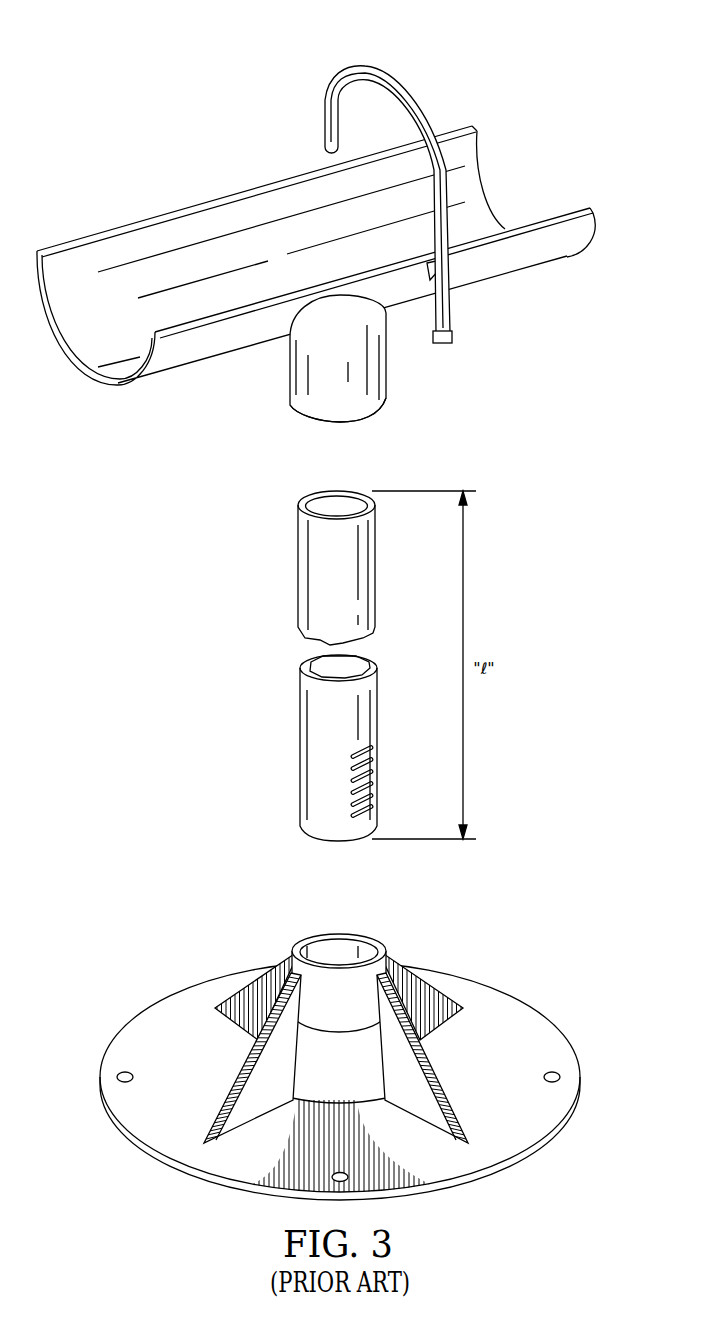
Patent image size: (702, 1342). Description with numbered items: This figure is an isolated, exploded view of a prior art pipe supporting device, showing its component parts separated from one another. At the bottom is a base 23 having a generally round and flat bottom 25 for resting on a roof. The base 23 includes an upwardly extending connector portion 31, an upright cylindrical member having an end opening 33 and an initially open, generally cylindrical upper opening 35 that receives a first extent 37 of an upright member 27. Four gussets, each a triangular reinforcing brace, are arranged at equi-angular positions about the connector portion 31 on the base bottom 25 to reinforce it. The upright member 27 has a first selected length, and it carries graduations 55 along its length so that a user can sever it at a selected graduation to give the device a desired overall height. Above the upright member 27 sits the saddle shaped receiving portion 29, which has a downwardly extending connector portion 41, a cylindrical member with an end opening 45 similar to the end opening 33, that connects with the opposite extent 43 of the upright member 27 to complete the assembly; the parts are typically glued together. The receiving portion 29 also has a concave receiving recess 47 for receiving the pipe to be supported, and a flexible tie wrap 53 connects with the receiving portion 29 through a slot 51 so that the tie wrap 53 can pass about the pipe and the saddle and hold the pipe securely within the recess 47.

The base 23 is at (340, 1089).
The bottom 25 is at (467, 1182).
The upright member 27 is at (337, 568).
The receiving portion 29 is at (207, 363).
The upwardly extending connector portion 31 is at (320, 1087).
The end opening 33 is at (332, 937).
The upper opening 35 is at (318, 989).
The first extent 37 is at (365, 775).
The downwardly extending connector portion 41 is at (335, 413).
The opposite extent 43 is at (309, 552).
The end opening 45 is at (366, 387).
The concave receiving recess 47 is at (197, 230).
The slot 51 is at (455, 260).
The tie wrap 53 is at (367, 62).
The graduations 55 is at (378, 770).